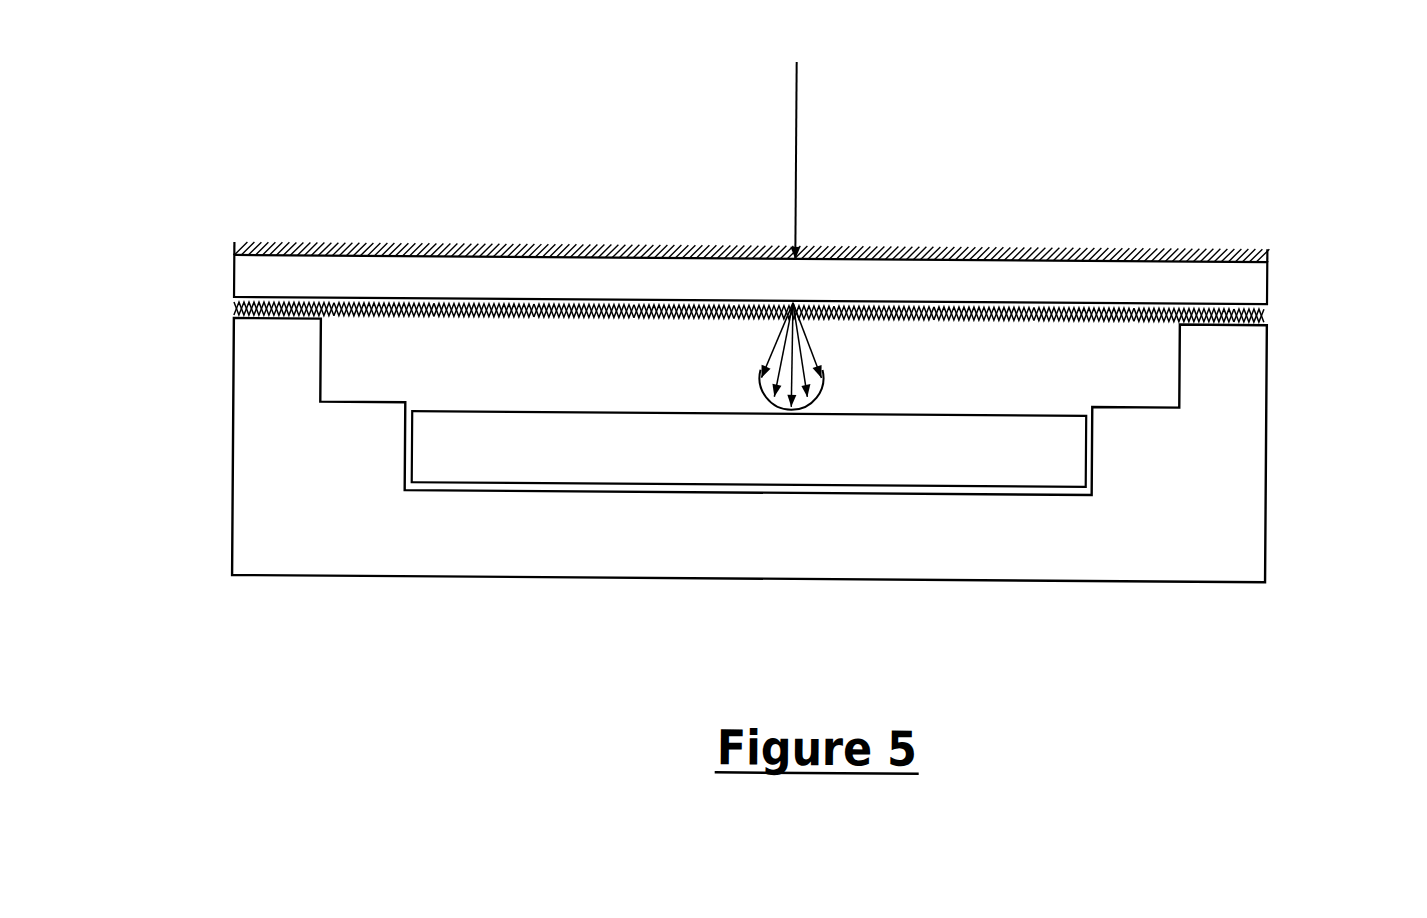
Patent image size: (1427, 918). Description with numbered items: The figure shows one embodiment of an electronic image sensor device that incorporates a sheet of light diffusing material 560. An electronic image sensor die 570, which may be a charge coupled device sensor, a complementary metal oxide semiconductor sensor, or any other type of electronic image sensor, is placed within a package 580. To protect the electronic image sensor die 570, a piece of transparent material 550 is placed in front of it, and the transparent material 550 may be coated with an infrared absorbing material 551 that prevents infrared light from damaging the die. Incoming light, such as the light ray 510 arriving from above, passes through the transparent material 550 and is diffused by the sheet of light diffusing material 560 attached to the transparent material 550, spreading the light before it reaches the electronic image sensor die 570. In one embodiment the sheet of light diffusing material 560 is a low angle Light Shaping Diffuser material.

The light ray 510 is at (824, 160).
The transparent material 550 is at (750, 273).
The infrared absorbing material 551 is at (237, 249).
The sheet of light diffusing material 560 is at (1273, 310).
The electronic image sensor die 570 is at (749, 449).
The package 580 is at (749, 450).